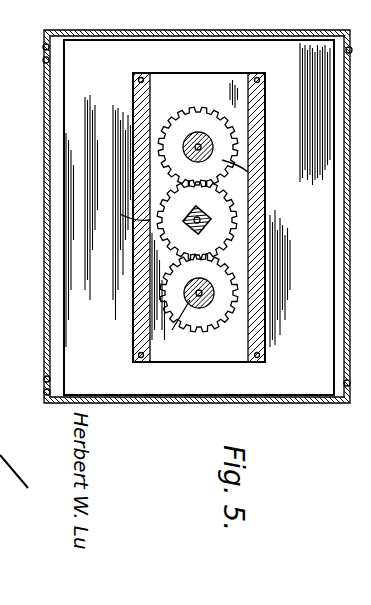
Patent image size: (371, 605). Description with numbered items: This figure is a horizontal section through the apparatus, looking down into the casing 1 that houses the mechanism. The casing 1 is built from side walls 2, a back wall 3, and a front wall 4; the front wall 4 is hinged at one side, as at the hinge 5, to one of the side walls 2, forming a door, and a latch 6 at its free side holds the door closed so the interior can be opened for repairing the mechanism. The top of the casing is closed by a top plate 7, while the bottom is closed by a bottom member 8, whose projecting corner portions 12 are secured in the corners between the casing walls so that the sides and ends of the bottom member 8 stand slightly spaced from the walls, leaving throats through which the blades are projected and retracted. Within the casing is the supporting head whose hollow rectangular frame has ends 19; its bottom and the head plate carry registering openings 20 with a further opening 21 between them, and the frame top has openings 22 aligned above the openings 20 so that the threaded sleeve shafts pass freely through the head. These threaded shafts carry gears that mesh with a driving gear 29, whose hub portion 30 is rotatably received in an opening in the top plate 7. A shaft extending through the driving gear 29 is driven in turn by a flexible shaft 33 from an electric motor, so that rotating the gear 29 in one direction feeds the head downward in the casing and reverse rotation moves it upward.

The casing 1 is at (165, 365).
The side walls 2 is at (283, 40).
The back wall 3 is at (350, 233).
The front wall 4 is at (46, 230).
The hinge 5 is at (44, 34).
The latch 6 is at (50, 400).
The top plate 7 is at (298, 402).
The bottom member 8 is at (357, 240).
The projecting corner portions 12 is at (270, 402).
The ends 19 is at (183, 168).
The registering openings 20 is at (188, 225).
The opening 21 is at (205, 300).
The openings 22 is at (173, 319).
The driving gear 29 is at (126, 211).
The hub portion 30 is at (265, 233).
The flexible shaft 33 is at (31, 340).